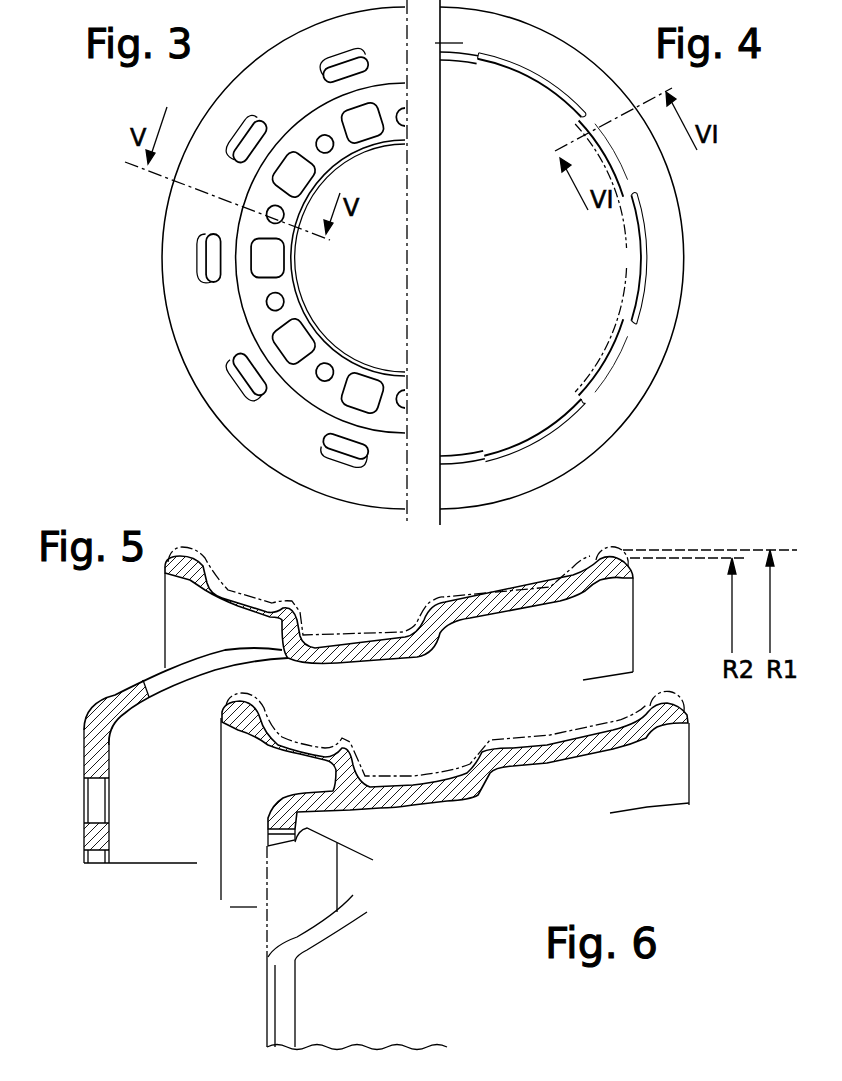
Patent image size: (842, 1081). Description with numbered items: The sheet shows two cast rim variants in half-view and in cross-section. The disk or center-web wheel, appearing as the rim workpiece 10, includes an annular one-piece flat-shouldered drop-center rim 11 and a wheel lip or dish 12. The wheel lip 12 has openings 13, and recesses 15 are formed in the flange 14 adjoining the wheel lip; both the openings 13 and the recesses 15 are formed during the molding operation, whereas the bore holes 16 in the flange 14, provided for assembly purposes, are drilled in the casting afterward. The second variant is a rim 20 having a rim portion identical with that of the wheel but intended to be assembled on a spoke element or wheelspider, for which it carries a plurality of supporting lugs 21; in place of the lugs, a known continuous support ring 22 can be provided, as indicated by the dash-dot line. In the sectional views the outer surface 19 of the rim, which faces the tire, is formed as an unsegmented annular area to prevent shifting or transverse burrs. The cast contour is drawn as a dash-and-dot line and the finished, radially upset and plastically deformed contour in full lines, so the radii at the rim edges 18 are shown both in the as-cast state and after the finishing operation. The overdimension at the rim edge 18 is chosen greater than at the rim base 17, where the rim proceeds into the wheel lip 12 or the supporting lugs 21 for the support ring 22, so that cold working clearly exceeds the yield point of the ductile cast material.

In FIG. 3, the rim workpiece 10 is at (370, 258).
In FIG. 5, the rim workpiece 10 is at (389, 703).
In FIG. 3, the drop-center rim 11 is at (387, 258).
In FIG. 4, the drop-center rim 11 is at (590, 445).
In FIG. 5, the drop-center rim 11 is at (453, 613).
In FIG. 6, the drop-center rim 11 is at (528, 763).
In FIG. 3, the wheel lip 12 is at (387, 296).
In FIG. 5, the wheel lip 12 is at (130, 712).
In FIG. 3, the openings 13 is at (232, 258).
In FIG. 5, the openings 13 is at (167, 673).
In FIG. 3, the flange 14 is at (400, 258).
In FIG. 5, the flange 14 is at (109, 778).
In FIG. 3, the recesses 15 is at (318, 258).
In FIG. 3, the bore holes 16 is at (338, 258).
In FIG. 5, the bore holes 16 is at (100, 810).
In FIG. 5, the rim base 17 is at (365, 638).
In FIG. 6, the rim base 17 is at (418, 782).
In FIG. 5, the rim edge 18 is at (177, 638).
In FIG. 6, the rim edge 18 is at (232, 789).
In FIG. 5, the outer surface 19 is at (520, 592).
In FIG. 6, the outer surface 19 is at (590, 743).
In FIG. 4, the rim 20 is at (569, 258).
In FIG. 6, the rim 20 is at (336, 939).
In FIG. 4, the supporting lugs 21 is at (543, 258).
In FIG. 6, the supporting lugs 21 is at (285, 835).
In FIG. 4, the support ring 22 is at (568, 276).
In FIG. 6, the support ring 22 is at (268, 917).